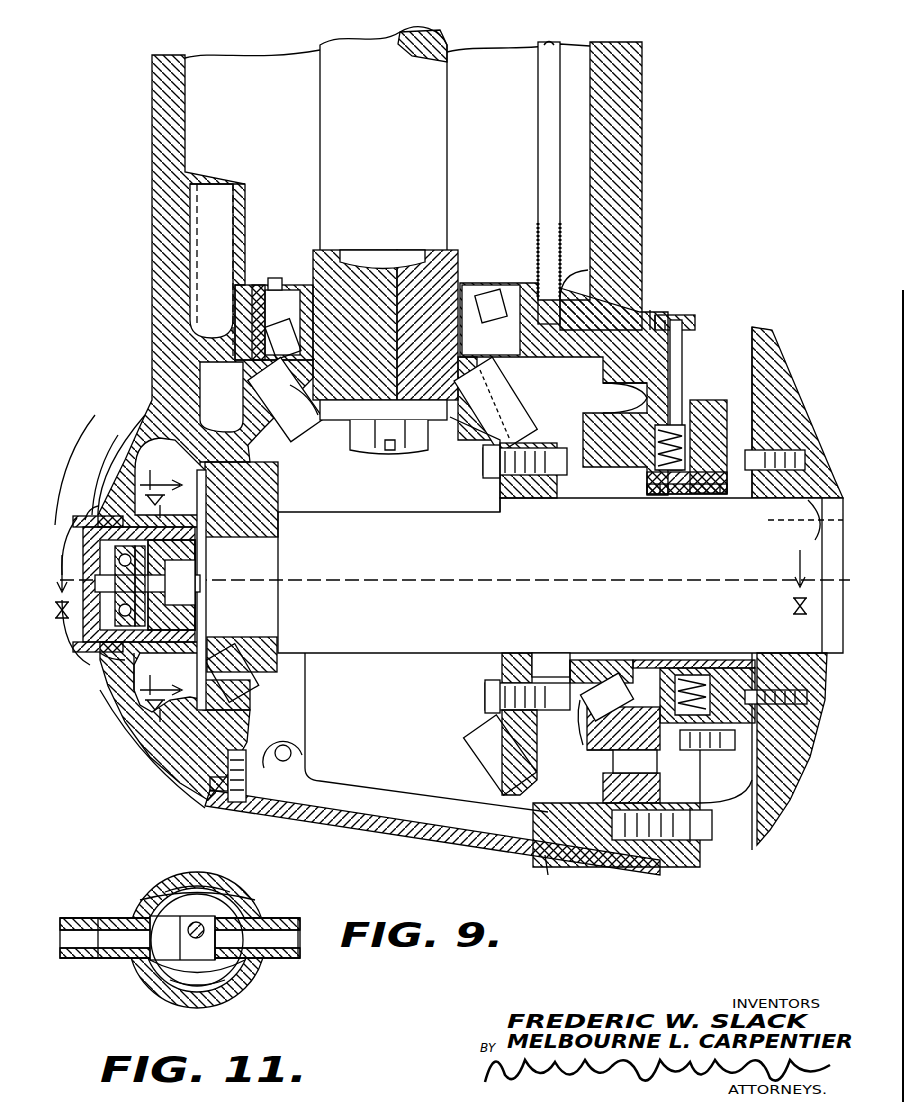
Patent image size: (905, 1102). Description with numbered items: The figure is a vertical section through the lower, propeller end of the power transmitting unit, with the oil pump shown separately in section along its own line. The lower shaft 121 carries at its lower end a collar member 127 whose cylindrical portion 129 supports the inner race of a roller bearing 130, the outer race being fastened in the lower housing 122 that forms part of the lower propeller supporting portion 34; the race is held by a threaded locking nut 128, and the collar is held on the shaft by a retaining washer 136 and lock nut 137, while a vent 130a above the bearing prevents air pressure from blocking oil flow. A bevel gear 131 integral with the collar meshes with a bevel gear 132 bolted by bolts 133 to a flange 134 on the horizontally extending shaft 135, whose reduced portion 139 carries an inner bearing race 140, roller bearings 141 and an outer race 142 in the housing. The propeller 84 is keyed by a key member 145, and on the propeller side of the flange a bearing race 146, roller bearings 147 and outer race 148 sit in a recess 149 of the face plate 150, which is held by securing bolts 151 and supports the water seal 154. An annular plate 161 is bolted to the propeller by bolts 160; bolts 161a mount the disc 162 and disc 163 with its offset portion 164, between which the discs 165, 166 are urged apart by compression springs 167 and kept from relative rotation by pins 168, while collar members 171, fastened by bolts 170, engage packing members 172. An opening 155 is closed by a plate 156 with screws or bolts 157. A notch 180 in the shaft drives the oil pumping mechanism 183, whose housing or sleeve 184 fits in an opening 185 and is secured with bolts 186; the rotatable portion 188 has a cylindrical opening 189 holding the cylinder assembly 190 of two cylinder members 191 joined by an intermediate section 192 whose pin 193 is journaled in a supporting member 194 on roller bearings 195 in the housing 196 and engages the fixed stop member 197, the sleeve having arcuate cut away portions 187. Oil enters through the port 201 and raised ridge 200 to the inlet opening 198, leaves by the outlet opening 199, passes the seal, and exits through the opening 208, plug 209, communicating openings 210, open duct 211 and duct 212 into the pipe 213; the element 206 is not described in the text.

In FIG. 9, the lower shaft 121 is at (362, 70).
In FIG. 9, the pipe 213 is at (547, 75).
In FIG. 9, the lower housing 122 is at (620, 118).
In FIG. 11, the lower housing 122 is at (245, 890).
In FIG. 9, the vent 130a is at (210, 208).
In FIG. 9, the cylindrical portion 129 is at (260, 288).
In FIG. 9, the threaded locking nut 128 is at (275, 280).
In FIG. 9, the collar member 127 is at (330, 252).
In FIG. 9, the open duct 211 is at (650, 310).
In FIG. 9, the communicating openings 210 is at (655, 315).
In FIG. 9, the plug 209 is at (665, 320).
In FIG. 9, the opening 208 is at (698, 318).
In FIG. 9, the duct 212 is at (548, 285).
In FIG. 9, the roller bearing 130 is at (250, 301).
In FIG. 9, the lower propeller supporting portion 34 is at (178, 348).
In FIG. 9, the propeller 84 is at (766, 365).
In FIG. 9, the water seal 154 is at (686, 390).
In FIG. 9, the compression springs 167 is at (700, 405).
In FIG. 9, the bolts 160 is at (776, 440).
In FIG. 9, the bevel gear 131 is at (262, 402).
In FIG. 9, the flange 134 is at (536, 442).
In FIG. 9, the cavity 206 is at (650, 413).
In FIG. 9, the retaining washer 136 is at (346, 424).
In FIG. 9, the lock nut 137 is at (352, 450).
In FIG. 9, the opening 185 is at (142, 518).
In FIG. 11, the opening 185 is at (170, 892).
In FIG. 9, the oil pumping mechanism 183 is at (121, 518).
In FIG. 9, the housing 196 is at (113, 518).
In FIG. 9, the bolts 186 is at (110, 491).
In FIG. 9, the inner bearing race 140 is at (276, 506).
In FIG. 9, the horizontally extending shaft 135 is at (391, 532).
In FIG. 9, the bolts 133 is at (484, 470).
In FIG. 9, the bolts 170 is at (651, 496).
In FIG. 9, the collar members 171 is at (661, 496).
In FIG. 9, the packing members 172 is at (670, 496).
In FIG. 9, the annular plate 161 is at (758, 535).
In FIG. 9, the key member 145 is at (812, 522).
In FIG. 9, the pin 193 is at (96, 580).
In FIG. 11, the pin 193 is at (204, 930).
In FIG. 9, the notch 180 is at (214, 580).
In FIG. 9, the reduced portion 139 is at (265, 564).
In FIG. 9, the intermediate section 192 is at (152, 603).
In FIG. 11, the intermediate section 192 is at (248, 905).
In FIG. 9, the rotatable portion 188 is at (152, 622).
In FIG. 11, the rotatable portion 188 is at (215, 970).
In FIG. 9, the fixed stop member 197 is at (90, 641).
In FIG. 9, the supporting member 194 is at (130, 656).
In FIG. 9, the roller bearings 195 is at (126, 662).
In FIG. 9, the housing or sleeve 184 is at (142, 660).
In FIG. 11, the housing or sleeve 184 is at (215, 895).
In FIG. 9, the cylindrical opening 189 is at (159, 690).
In FIG. 11, the cylindrical opening 189 is at (162, 970).
In FIG. 9, the disc 166 is at (676, 662).
In FIG. 9, the disc 165 is at (706, 660).
In FIG. 9, the roller bearings 141 is at (296, 684).
In FIG. 9, the outer race 142 is at (292, 706).
In FIG. 9, the raised ridge 200 is at (293, 722).
In FIG. 9, the port 201 is at (292, 754).
In FIG. 9, the bevel gear 132 is at (502, 674).
In FIG. 9, the bearing race 146 is at (586, 700).
In FIG. 9, the roller bearings 147 is at (596, 706).
In FIG. 9, the outer race 148 is at (601, 712).
In FIG. 9, the recess 149 is at (612, 762).
In FIG. 9, the offset portion 164 is at (620, 752).
In FIG. 9, the pins 168 is at (702, 752).
In FIG. 9, the bolts 161a is at (753, 722).
In FIG. 9, the disc 162 is at (782, 732).
In FIG. 9, the opening 155 is at (212, 792).
In FIG. 9, the screws or bolts 157 is at (238, 804).
In FIG. 9, the plate 156 is at (405, 836).
In FIG. 9, the face plate 150 is at (621, 850).
In FIG. 9, the securing bolts 151 is at (686, 862).
In FIG. 9, the disc 163 is at (716, 805).
In FIG. 11, the arcuate cut away portions 187 is at (160, 905).
In FIG. 11, the inlet opening 198 is at (112, 935).
In FIG. 11, the cylinder assembly 190 is at (150, 940).
In FIG. 11, the cylinder members 191 is at (185, 985).
In FIG. 11, the outlet opening 199 is at (272, 950).